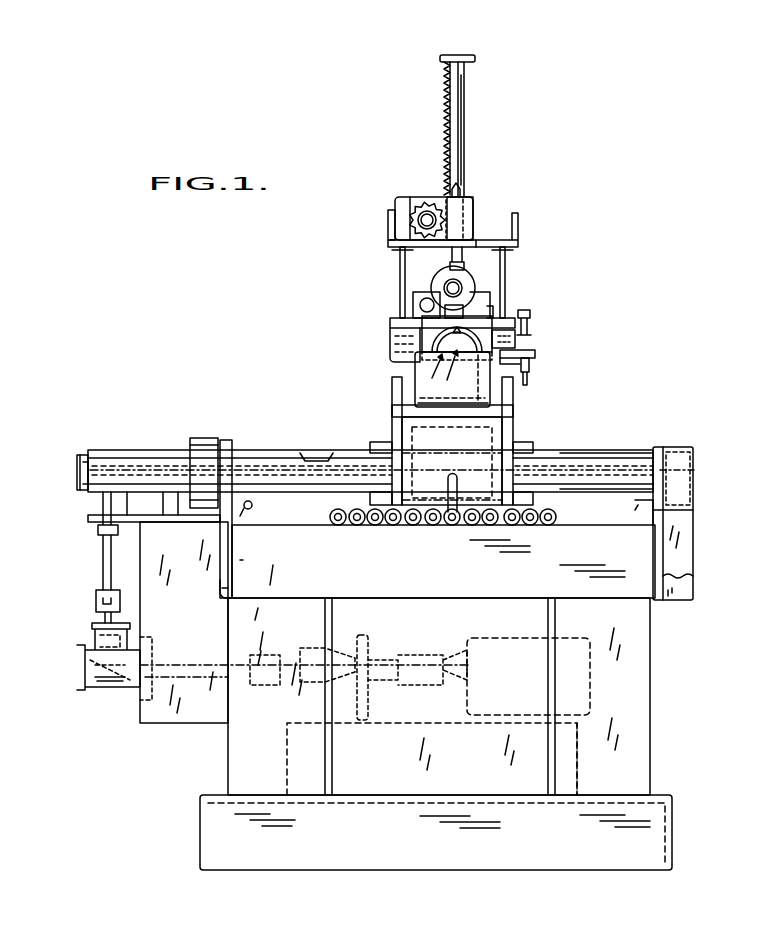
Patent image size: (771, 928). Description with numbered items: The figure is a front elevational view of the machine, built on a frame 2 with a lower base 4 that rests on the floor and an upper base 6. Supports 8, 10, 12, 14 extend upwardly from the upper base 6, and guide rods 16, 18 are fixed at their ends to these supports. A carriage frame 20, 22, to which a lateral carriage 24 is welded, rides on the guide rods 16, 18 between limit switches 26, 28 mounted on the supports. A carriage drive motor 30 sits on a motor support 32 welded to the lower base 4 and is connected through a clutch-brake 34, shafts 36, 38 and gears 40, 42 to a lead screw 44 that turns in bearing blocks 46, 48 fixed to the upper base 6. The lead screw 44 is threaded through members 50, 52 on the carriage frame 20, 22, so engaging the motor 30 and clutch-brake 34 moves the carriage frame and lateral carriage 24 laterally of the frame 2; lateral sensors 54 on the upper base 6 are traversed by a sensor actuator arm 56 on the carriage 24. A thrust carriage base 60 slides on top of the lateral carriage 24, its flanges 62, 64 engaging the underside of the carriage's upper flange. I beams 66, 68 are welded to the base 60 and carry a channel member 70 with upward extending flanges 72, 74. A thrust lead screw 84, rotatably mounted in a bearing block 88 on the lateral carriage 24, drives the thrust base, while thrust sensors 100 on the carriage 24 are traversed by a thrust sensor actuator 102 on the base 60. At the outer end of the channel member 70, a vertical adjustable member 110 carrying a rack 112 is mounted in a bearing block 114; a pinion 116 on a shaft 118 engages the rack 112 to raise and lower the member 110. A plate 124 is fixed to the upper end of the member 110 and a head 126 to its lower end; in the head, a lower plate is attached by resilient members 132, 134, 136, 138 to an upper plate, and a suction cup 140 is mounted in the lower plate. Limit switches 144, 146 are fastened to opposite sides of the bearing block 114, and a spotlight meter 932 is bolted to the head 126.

The frame 2 is at (655, 745).
The lower base 4 is at (215, 832).
The upper base 6 is at (625, 596).
The support 8 is at (690, 538).
The support 10 is at (690, 585).
The support 12 is at (232, 545).
The support 14 is at (230, 582).
The guide rod 16 is at (272, 452).
The guide rod 18 is at (322, 453).
The carriage frame 20 is at (513, 425).
The carriage frame 22 is at (392, 396).
The lateral carriage 24 is at (483, 392).
The limit switch 26 is at (253, 512).
The limit switch 28 is at (648, 522).
The carriage drive motor 30 is at (510, 640).
The motor support 32 is at (396, 767).
The clutch-brake 34 is at (390, 652).
The shaft 36 is at (190, 664).
The shaft 38 is at (106, 607).
The gear 40 is at (80, 676).
The gear 42 is at (108, 462).
The lead screw 44 is at (608, 465).
The bearing block 46 is at (168, 455).
The bearing block 48 is at (695, 467).
The threaded member 50 is at (452, 461).
The threaded member 52 is at (452, 462).
The lateral sensor 54 is at (374, 525).
The sensor actuator arm 56 is at (447, 516).
The thrust carriage base 60 is at (392, 332).
The flange 62 is at (405, 352).
The flange 64 is at (535, 360).
The I beam 66 is at (400, 280).
The I beam 68 is at (505, 281).
The channel member 70 is at (483, 246).
The upward extending flange 72 is at (395, 212).
The upward extending flange 74 is at (518, 225).
The lead screw 84 is at (447, 285).
The bearing block 88 is at (476, 294).
The thrust sensor 100 is at (530, 372).
The thrust sensor actuator 102 is at (531, 325).
The vertical adjustable member 110 is at (462, 108).
The rack 112 is at (446, 98).
The bearing block 114 is at (473, 210).
The pinion 116 is at (427, 200).
The shaft 118 is at (418, 216).
The plate 124 is at (452, 55).
The head 126 is at (412, 388).
The resilient member 132 is at (515, 341).
The resilient member 134 is at (452, 379).
The resilient member 136 is at (405, 325).
The resilient member 138 is at (392, 341).
The suction cup 140 is at (438, 373).
The limit switch 144 is at (462, 192).
The limit switch 146 is at (466, 260).
The spotlight meter 932 is at (413, 298).